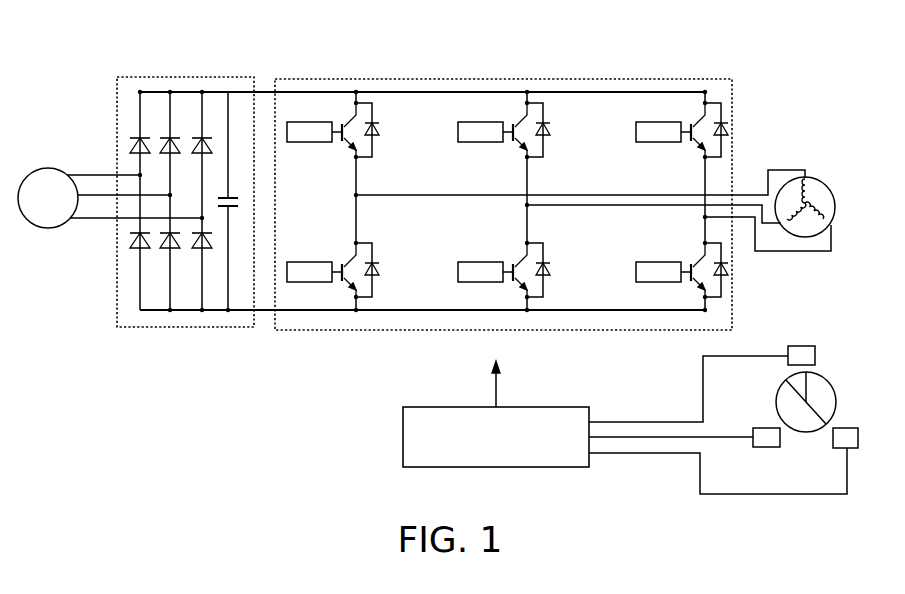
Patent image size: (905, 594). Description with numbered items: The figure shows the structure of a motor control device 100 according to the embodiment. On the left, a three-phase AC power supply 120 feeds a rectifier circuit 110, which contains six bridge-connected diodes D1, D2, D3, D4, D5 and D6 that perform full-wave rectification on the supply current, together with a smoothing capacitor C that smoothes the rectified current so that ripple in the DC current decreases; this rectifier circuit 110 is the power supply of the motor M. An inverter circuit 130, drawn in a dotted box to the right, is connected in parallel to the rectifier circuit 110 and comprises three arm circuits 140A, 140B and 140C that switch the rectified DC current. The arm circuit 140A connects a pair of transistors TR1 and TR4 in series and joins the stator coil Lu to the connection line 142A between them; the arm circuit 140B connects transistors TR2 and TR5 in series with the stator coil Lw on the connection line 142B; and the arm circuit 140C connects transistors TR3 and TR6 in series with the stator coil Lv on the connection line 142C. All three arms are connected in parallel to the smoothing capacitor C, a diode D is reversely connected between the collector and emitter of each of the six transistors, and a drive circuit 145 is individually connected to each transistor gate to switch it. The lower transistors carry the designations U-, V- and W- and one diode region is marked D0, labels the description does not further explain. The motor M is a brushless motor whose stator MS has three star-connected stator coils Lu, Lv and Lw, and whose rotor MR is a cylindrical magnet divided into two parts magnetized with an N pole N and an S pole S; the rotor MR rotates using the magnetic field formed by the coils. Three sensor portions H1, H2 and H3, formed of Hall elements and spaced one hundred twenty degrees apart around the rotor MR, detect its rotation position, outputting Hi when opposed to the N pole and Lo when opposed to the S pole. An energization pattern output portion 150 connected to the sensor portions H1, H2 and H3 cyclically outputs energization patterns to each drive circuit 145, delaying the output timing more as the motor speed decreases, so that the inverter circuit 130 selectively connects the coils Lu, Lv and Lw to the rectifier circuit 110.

The motor control device 100 is at (445, 250).
The rectifier circuit 110 is at (185, 177).
The AC power supply 120 is at (50, 167).
The inverter circuit 130 is at (302, 79).
The arm circuit 140A is at (334, 184).
The arm circuit 140B is at (504, 184).
The arm circuit 140C is at (681, 184).
The connection line 142A is at (357, 221).
The connection line 142B is at (529, 233).
The connection line 142C is at (708, 181).
The drive circuit 145 is at (296, 143).
The energization pattern output portion 150 is at (532, 407).
The diode D1 is at (142, 136).
The diode D2 is at (172, 136).
The diode D3 is at (204, 136).
The diode D4 is at (142, 252).
The diode D5 is at (172, 252).
The diode D6 is at (204, 252).
The smoothing capacitor C is at (226, 196).
The diode D is at (380, 126).
The diode designation D0 is at (624, 107).
The transistor TR1 is at (344, 144).
The transistor TR2 is at (515, 144).
The transistor TR3 is at (693, 144).
The transistor TR4 is at (344, 284).
The transistor TR5 is at (515, 284).
The transistor TR6 is at (693, 284).
The U-phase lower switching element U- is at (337, 242).
The V-phase lower switching element V- is at (508, 242).
The W-phase lower switching element W- is at (680, 242).
The motor M is at (815, 214).
The stator MS is at (804, 178).
The stator coil Lu is at (816, 190).
The stator coil Lv is at (826, 228).
The stator coil Lw is at (783, 226).
The rotor MR is at (820, 390).
The N-pole N is at (818, 394).
The S-pole S is at (795, 414).
The sensor portion H1 is at (801, 355).
The sensor portion H2 is at (766, 437).
The sensor portion H3 is at (845, 438).